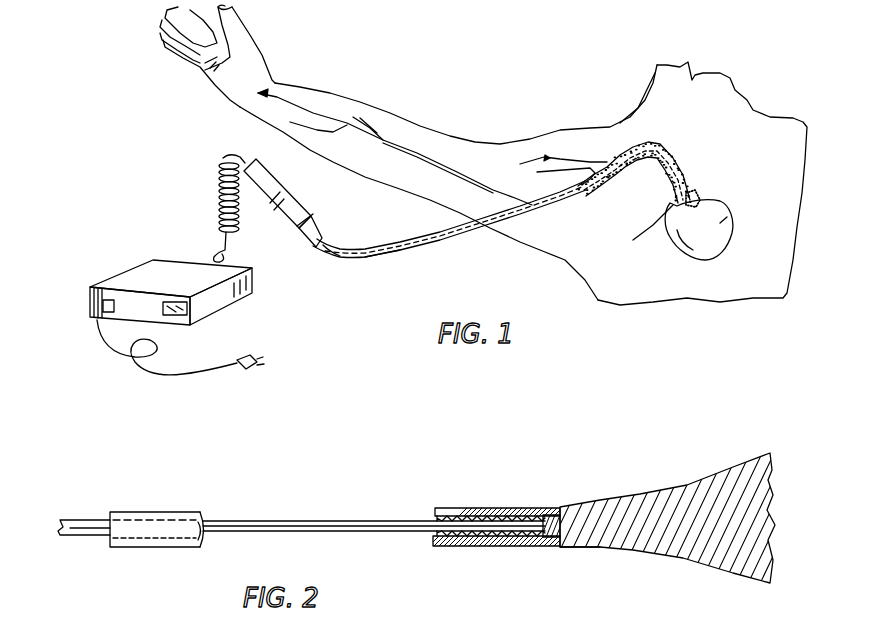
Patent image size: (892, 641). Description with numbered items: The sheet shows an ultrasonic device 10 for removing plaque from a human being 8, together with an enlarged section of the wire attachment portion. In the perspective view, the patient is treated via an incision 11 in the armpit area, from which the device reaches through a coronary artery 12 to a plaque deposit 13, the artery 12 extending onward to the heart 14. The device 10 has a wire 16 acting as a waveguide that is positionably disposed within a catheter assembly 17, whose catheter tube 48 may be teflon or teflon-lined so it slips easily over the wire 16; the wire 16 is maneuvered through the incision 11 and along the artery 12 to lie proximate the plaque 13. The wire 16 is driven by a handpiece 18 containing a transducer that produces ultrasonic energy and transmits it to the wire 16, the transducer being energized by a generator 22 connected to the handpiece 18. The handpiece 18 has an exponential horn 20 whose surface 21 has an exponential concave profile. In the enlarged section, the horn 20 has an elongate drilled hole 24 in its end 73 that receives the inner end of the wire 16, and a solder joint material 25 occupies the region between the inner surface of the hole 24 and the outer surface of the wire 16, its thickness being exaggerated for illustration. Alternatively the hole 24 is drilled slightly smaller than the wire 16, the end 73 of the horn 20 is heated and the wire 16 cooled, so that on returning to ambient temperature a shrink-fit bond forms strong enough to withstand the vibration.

In FIG. 1, the human being 8 is at (627, 113).
In FIG. 1, the ultrasonic device 10 is at (168, 196).
In FIG. 1, the incision 11 is at (582, 208).
In FIG. 1, the coronary artery 12 is at (643, 140).
In FIG. 1, the plaque deposit 13 is at (695, 187).
In FIG. 1, the heart 14 is at (727, 207).
In FIG. 1, the wire 16 is at (467, 233).
In FIG. 2, the wire 16 is at (312, 518).
In FIG. 1, the catheter assembly 17 is at (331, 230).
In FIG. 2, the catheter assembly 17 is at (157, 506).
In FIG. 1, the handpiece 18 is at (265, 174).
In FIG. 1, the exponential horn 20 is at (294, 228).
In FIG. 2, the exponential horn 20 is at (678, 492).
In FIG. 2, the surface 21 is at (630, 547).
In FIG. 1, the generator 22 is at (163, 258).
In FIG. 2, the drilled hole 24 is at (557, 507).
In FIG. 2, the solder joint material 25 is at (480, 547).
In FIG. 1, the catheter tube 48 is at (393, 253).
In FIG. 2, the end 73 is at (435, 514).